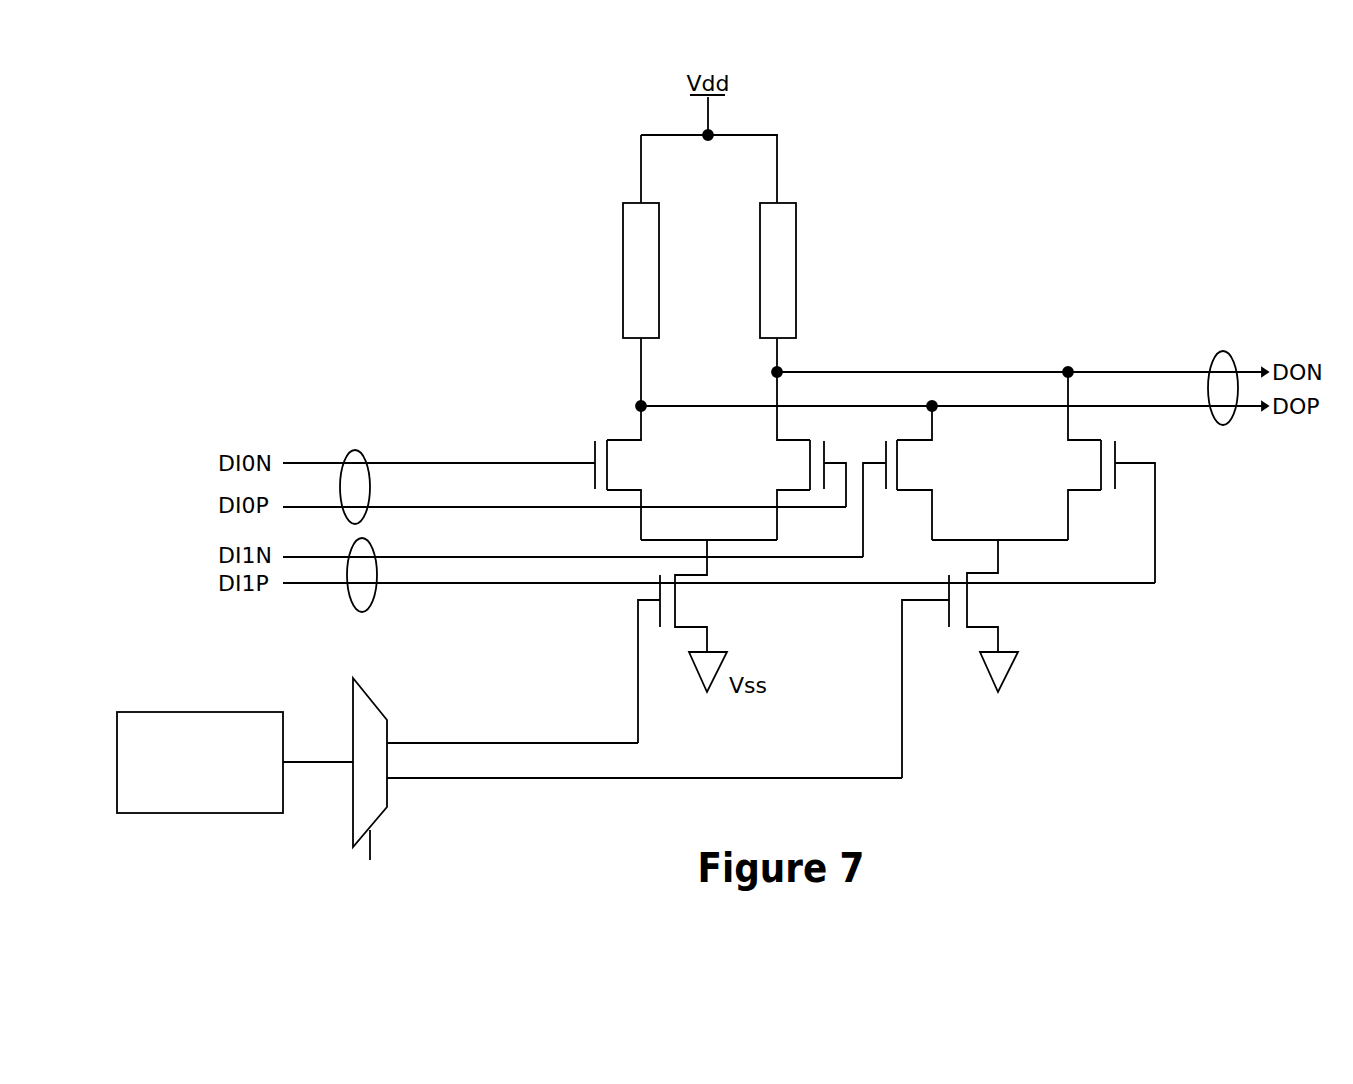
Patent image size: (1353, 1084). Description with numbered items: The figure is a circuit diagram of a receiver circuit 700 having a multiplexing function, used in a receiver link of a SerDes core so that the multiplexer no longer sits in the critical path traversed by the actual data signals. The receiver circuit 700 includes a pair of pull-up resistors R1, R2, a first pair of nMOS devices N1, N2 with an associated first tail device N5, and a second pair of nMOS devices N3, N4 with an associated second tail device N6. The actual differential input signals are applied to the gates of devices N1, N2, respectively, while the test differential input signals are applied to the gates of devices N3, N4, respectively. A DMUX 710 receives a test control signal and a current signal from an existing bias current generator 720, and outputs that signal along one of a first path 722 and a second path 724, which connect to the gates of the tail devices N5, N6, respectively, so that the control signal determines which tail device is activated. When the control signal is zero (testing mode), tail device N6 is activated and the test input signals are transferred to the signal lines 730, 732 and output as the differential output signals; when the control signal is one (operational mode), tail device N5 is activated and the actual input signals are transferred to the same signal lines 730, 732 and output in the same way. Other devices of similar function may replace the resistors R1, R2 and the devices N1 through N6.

The receiver circuit 700 is at (375, 219).
The DMUX 710 is at (382, 703).
The bias current generator 720 is at (116, 729).
The first path 722 is at (637, 707).
The second path 724 is at (845, 775).
The signal line 730 is at (1183, 408).
The signal line 732 is at (1180, 370).
The pull-up resistor R1 is at (660, 220).
The pull-up resistor R2 is at (756, 264).
The nMOS device N1 is at (629, 473).
The nMOS device N2 is at (804, 456).
The nMOS device N3 is at (913, 481).
The nMOS device N4 is at (1103, 477).
The first tail device N5 is at (683, 659).
The second tail device N6 is at (972, 676).